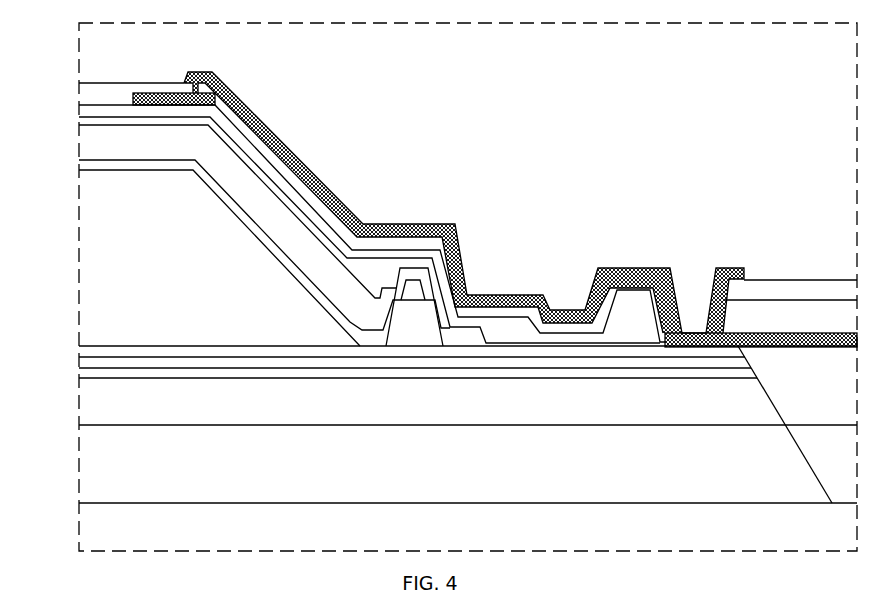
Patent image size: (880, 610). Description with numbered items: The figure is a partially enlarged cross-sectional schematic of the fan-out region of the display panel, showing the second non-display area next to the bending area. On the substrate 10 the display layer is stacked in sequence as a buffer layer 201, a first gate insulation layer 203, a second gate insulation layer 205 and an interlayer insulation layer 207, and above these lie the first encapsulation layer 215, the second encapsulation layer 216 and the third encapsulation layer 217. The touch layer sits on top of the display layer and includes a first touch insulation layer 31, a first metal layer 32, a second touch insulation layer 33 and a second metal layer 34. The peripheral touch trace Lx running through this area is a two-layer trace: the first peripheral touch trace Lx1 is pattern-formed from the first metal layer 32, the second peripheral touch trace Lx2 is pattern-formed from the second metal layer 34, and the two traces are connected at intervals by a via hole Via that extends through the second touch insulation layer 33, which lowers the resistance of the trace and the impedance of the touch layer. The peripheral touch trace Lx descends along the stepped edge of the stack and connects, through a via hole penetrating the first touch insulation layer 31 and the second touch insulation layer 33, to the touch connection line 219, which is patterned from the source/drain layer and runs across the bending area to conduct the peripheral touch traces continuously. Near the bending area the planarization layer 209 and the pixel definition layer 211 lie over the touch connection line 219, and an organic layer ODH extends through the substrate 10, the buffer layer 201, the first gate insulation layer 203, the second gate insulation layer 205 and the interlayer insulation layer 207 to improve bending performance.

The second metal layer 34 is at (183, 80).
The second touch insulation layer 33 is at (123, 88).
The first metal layer 32 is at (133, 98).
The first touch insulation layer 31 is at (102, 120).
The third encapsulation layer 217 is at (102, 137).
The second encapsulation layer 216 is at (102, 163).
The first encapsulation layer 215 is at (102, 205).
The interlayer insulation layer 207 is at (102, 352).
The second gate insulation layer 205 is at (102, 363).
The first gate insulation layer 203 is at (102, 373).
The buffer layer 201 is at (102, 403).
The substrate 10 is at (102, 470).
The pixel definition layer 211 is at (750, 292).
The planarization layer 209 is at (765, 317).
The touch connection line 219 is at (787, 335).
The organic layer ODH is at (823, 360).
The via hole Via is at (196, 88).
The first peripheral touch trace Lx1 is at (213, 73).
The second peripheral touch trace Lx2 is at (230, 88).
The peripheral touch trace Lx is at (442, 225).